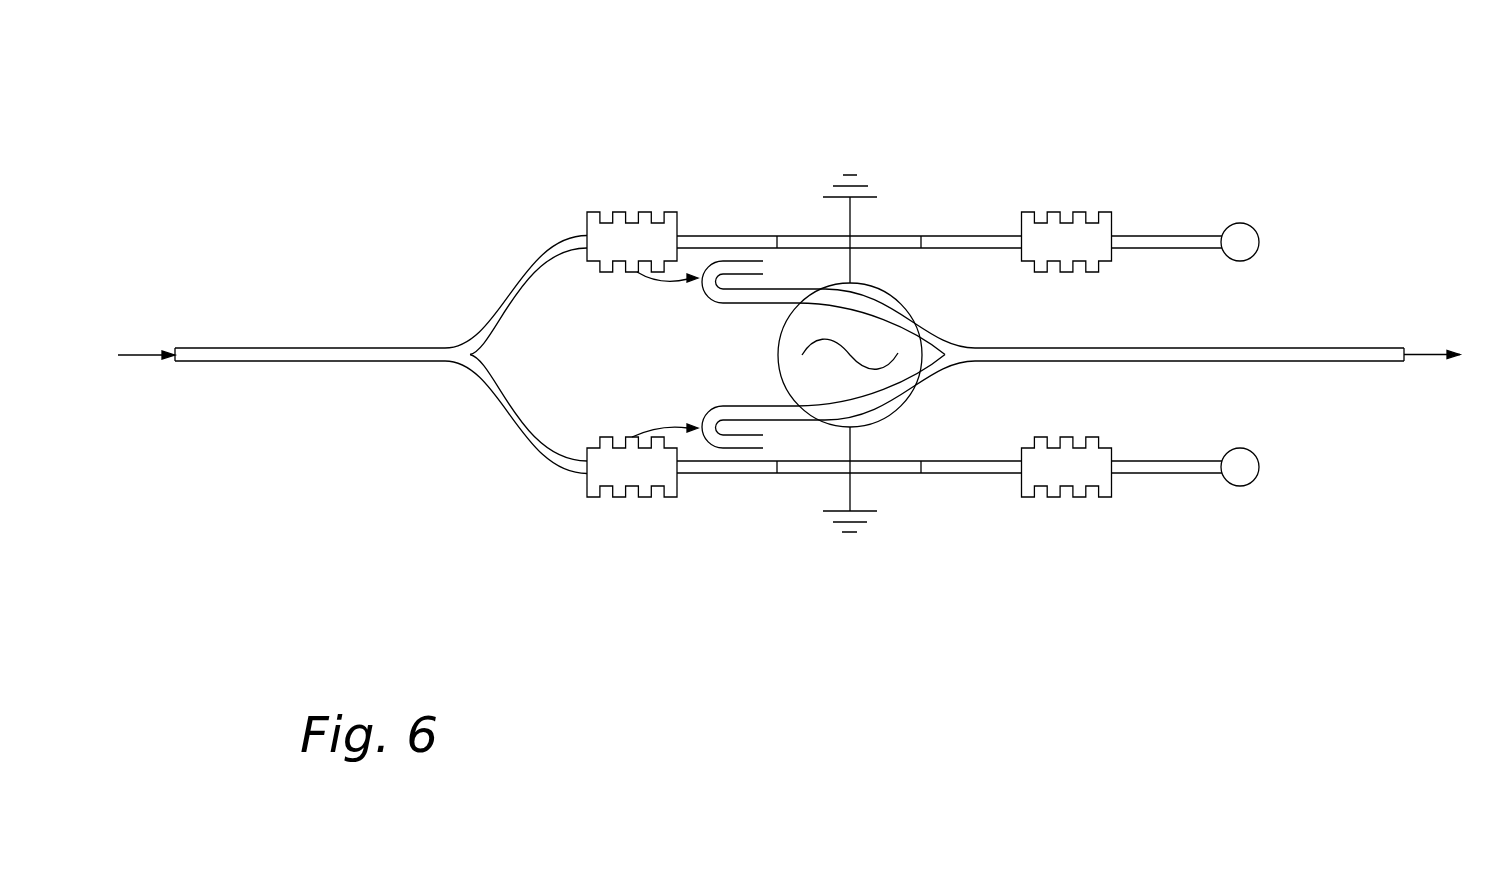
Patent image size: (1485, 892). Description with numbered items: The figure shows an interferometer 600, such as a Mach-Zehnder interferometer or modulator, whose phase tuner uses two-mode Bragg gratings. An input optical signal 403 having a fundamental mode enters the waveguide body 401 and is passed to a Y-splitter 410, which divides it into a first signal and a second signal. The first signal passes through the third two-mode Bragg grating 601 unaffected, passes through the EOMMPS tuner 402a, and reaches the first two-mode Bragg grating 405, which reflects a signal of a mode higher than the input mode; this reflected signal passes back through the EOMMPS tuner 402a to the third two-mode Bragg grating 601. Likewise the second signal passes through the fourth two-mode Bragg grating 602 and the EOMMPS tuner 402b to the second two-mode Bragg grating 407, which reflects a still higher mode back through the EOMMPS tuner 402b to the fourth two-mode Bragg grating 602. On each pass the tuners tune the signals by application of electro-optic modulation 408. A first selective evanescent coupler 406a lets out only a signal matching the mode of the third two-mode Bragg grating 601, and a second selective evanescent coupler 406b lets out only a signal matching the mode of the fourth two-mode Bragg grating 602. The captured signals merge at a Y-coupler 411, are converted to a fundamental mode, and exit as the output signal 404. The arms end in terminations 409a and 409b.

The interferometer 600 is at (230, 136).
The waveguide body 401 is at (300, 345).
The input optical signal 403 is at (140, 352).
The output signal 404 is at (1422, 350).
The Y-splitter 410 is at (461, 362).
The Y-coupler 411 is at (953, 357).
The first selective evanescent coupler 406a is at (594, 211).
The second selective evanescent coupler 406b is at (592, 497).
The third two-mode Bragg grating 601 is at (645, 212).
The fourth two-mode Bragg grating 602 is at (645, 497).
The EOMMPS tuner 402a is at (818, 240).
The EOMMPS tuner 402b is at (820, 466).
The electro-optic modulation 408 is at (848, 537).
The first two-mode Bragg grating 405 is at (1102, 211).
The second two-mode Bragg grating 407 is at (1103, 498).
The termination 409a is at (1240, 222).
The termination 409b is at (1238, 486).